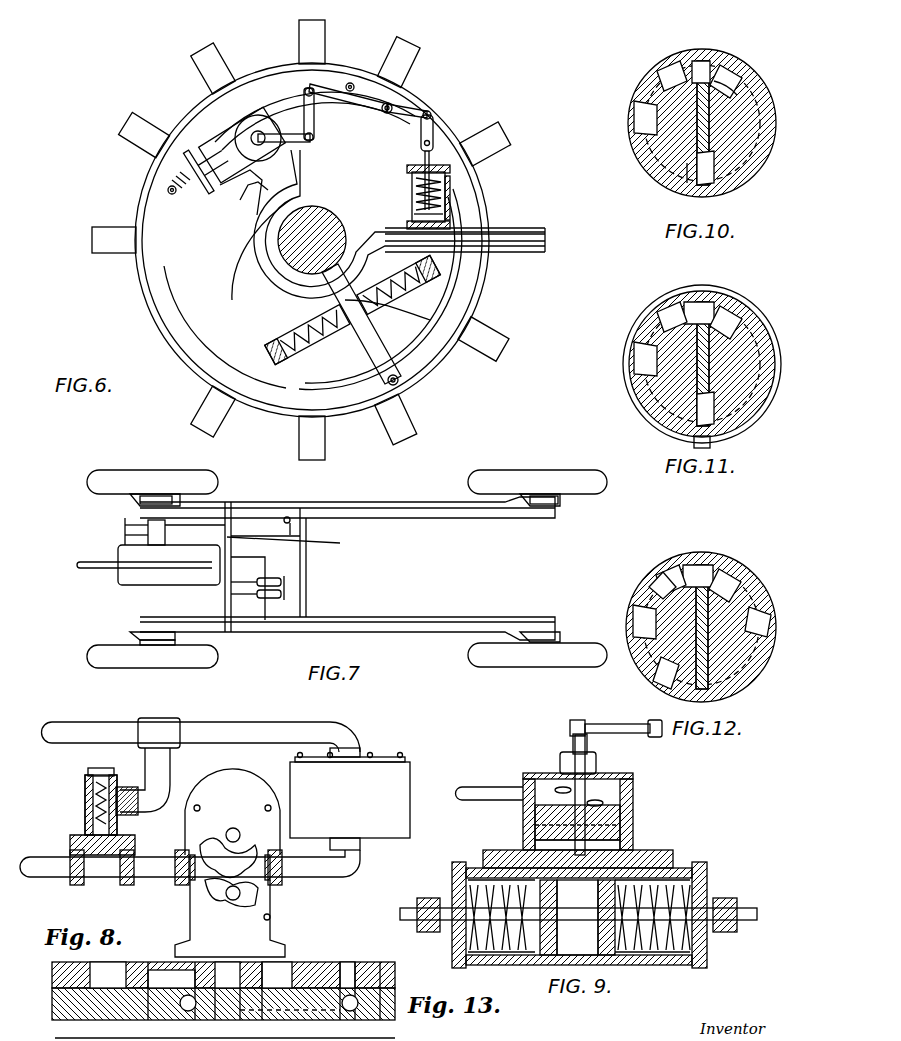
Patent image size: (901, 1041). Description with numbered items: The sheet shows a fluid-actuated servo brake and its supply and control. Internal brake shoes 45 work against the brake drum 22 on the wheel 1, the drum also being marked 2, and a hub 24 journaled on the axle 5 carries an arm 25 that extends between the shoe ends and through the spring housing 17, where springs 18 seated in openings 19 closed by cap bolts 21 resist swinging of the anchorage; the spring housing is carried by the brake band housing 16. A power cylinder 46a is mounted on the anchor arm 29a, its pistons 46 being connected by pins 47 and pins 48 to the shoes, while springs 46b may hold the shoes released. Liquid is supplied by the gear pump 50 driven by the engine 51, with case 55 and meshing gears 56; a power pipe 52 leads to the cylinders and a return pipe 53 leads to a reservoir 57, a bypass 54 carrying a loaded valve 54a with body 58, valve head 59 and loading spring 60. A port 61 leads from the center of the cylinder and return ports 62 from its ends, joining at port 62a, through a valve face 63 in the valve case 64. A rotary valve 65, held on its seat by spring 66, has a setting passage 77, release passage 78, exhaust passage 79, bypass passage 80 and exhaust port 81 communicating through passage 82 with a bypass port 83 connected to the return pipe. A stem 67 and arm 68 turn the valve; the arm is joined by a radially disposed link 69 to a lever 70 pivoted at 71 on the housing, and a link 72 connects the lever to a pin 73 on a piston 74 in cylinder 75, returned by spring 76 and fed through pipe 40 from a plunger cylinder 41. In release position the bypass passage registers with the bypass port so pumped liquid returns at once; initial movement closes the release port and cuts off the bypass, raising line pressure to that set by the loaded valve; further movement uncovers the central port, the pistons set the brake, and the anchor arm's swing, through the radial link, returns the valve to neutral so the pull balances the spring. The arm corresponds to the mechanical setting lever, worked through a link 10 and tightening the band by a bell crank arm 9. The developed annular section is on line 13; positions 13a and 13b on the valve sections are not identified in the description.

In FIG. 6, the wheel 1 is at (492, 138).
In FIG. 7, the wheel 1 is at (150, 478).
In FIG. 6, the brake drum 2 is at (178, 130).
In FIG. 6, the axle 5 is at (340, 226).
In FIG. 6, the bell crank arm 9 is at (168, 194).
In FIG. 9, the link 10 is at (535, 819).
In FIG. 10, the section line 13 is at (678, 153).
In FIG. 11, the rotor position 13a is at (671, 371).
In FIG. 12, the rotor position 13b is at (678, 627).
In FIG. 6, the brake band housing 16 is at (451, 190).
In FIG. 6, the spring housing 17 is at (304, 317).
In FIG. 6, the spring 18 is at (294, 324).
In FIG. 6, the openings 19 is at (407, 300).
In FIG. 6, the cap bolts 21 is at (259, 354).
In FIG. 6, the brake drum 22 is at (485, 316).
In FIG. 6, the hub 24 is at (322, 204).
In FIG. 6, the arm 25 is at (380, 378).
In FIG. 6, the anchor arm 29a is at (252, 182).
In FIG. 6, the pipe 40 is at (455, 236).
In FIG. 7, the pipe 40 is at (185, 628).
In FIG. 7, the plunger cylinder 41 is at (258, 596).
In FIG. 6, the brake shoes 45 is at (468, 297).
In FIG. 9, the pistons 46 is at (482, 955).
In FIG. 6, the power cylinder 46a is at (300, 92).
In FIG. 9, the power cylinder 46a is at (690, 862).
In FIG. 9, the springs 46b is at (492, 955).
In FIG. 6, the pins 47 is at (176, 182).
In FIG. 9, the pins 47 is at (420, 922).
In FIG. 6, the pins 48 is at (352, 84).
In FIG. 7, the pump 50 is at (150, 528).
In FIG. 8, the pump 50 is at (276, 903).
In FIG. 7, the engine 51 is at (135, 573).
In FIG. 6, the flexible pipe 52 is at (540, 241).
In FIG. 7, the flexible pipe 52 is at (294, 544).
In FIG. 8, the flexible pipe 52 is at (45, 880).
In FIG. 9, the flexible pipe 52 is at (486, 795).
In FIG. 6, the return flexible pipe 53 is at (515, 250).
In FIG. 7, the return flexible pipe 53 is at (228, 505).
In FIG. 8, the return flexible pipe 53 is at (100, 733).
In FIG. 11, the return flexible pipe 53 is at (731, 444).
In FIG. 7, the bypass 54 is at (292, 515).
In FIG. 8, the bypass 54 is at (172, 780).
In FIG. 7, the loaded valve 54a is at (285, 517).
In FIG. 8, the loaded valve 54a is at (80, 783).
In FIG. 8, the case 55 is at (237, 800).
In FIG. 8, the meshing gears 56 is at (222, 840).
In FIG. 7, the reservoir 57 is at (150, 522).
In FIG. 8, the reservoir 57 is at (380, 775).
In FIG. 8, the body 58 is at (70, 845).
In FIG. 8, the valve head 59 is at (128, 815).
In FIG. 8, the loading spring 60 is at (86, 800).
In FIG. 9, the port 61 is at (577, 917).
In FIG. 13, the port 61 is at (138, 1000).
In FIG. 10, the port 61 is at (667, 69).
In FIG. 12, the port 61 is at (647, 578).
In FIG. 9, the return ports 62 is at (490, 856).
In FIG. 9, the port 62a is at (632, 840).
In FIG. 13, the port 62a is at (221, 1001).
In FIG. 10, the port 62a is at (751, 72).
In FIG. 12, the port 62a is at (744, 573).
In FIG. 9, the valve face 63 is at (536, 845).
In FIG. 6, the valve case 64 is at (240, 120).
In FIG. 9, the valve case 64 is at (634, 780).
In FIG. 11, the valve case 64 is at (600, 410).
In FIG. 9, the rotary valve 65 is at (592, 790).
In FIG. 10, the rotary valve 65 is at (713, 123).
In FIG. 11, the rotary valve 65 is at (708, 364).
In FIG. 12, the rotary valve 65 is at (711, 627).
In FIG. 9, the spring 66 is at (600, 782).
In FIG. 9, the stem 67 is at (573, 748).
In FIG. 6, the arm 68 is at (296, 142).
In FIG. 9, the arm 68 is at (630, 728).
In FIG. 6, the radially disposed link 69 is at (316, 118).
In FIG. 6, the lever 70 is at (368, 112).
In FIG. 6, the pivot 71 is at (395, 105).
In FIG. 6, the link 72 is at (433, 126).
In FIG. 6, the pin 73 is at (423, 155).
In FIG. 6, the piston 74 is at (441, 206).
In FIG. 6, the cylinder 75 is at (414, 192).
In FIG. 6, the spring 76 is at (446, 180).
In FIG. 13, the setting passage 77 is at (109, 993).
In FIG. 10, the setting passage 77 is at (623, 121).
In FIG. 11, the setting passage 77 is at (629, 355).
In FIG. 12, the setting passage 77 is at (628, 612).
In FIG. 13, the release passage 78 is at (277, 992).
In FIG. 10, the release passage 78 is at (756, 80).
In FIG. 11, the release passage 78 is at (749, 317).
In FIG. 12, the release passage 78 is at (773, 615).
In FIG. 13, the exhaust passage 79 is at (171, 993).
In FIG. 10, the exhaust passage 79 is at (658, 57).
In FIG. 11, the exhaust passage 79 is at (699, 298).
In FIG. 12, the exhaust passage 79 is at (702, 560).
In FIG. 13, the bypass passage 80 is at (343, 993).
In FIG. 10, the bypass passage 80 is at (726, 179).
In FIG. 11, the bypass passage 80 is at (682, 425).
In FIG. 12, the bypass passage 80 is at (653, 679).
In FIG. 13, the exhaust port 81 is at (173, 1000).
In FIG. 10, the exhaust port 81 is at (713, 98).
In FIG. 11, the exhaust port 81 is at (703, 341).
In FIG. 12, the exhaust port 81 is at (703, 602).
In FIG. 13, the passage 82 is at (223, 1001).
In FIG. 13, the bypass port 83 is at (374, 998).
In FIG. 10, the bypass port 83 is at (677, 186).